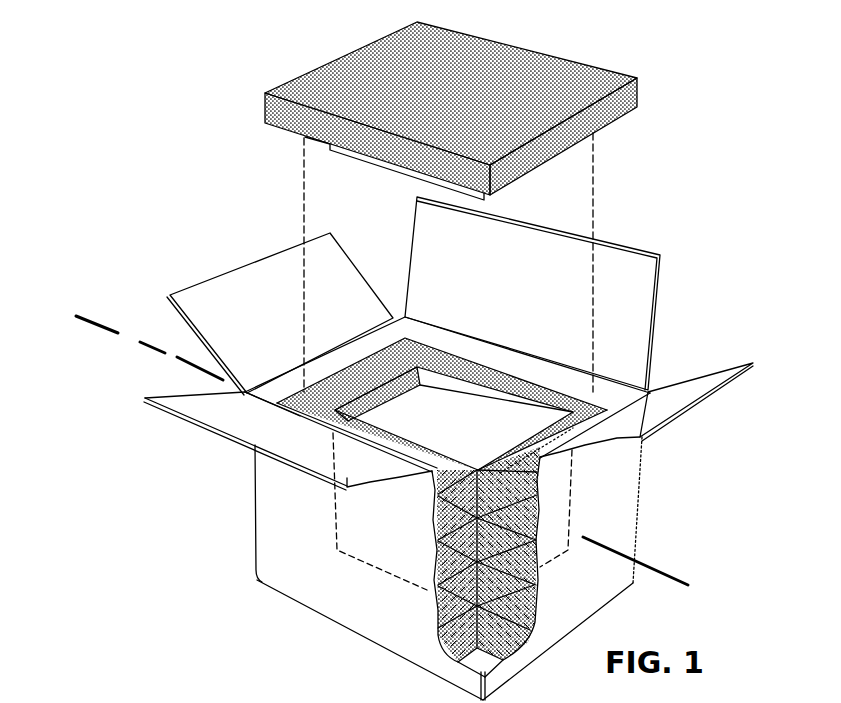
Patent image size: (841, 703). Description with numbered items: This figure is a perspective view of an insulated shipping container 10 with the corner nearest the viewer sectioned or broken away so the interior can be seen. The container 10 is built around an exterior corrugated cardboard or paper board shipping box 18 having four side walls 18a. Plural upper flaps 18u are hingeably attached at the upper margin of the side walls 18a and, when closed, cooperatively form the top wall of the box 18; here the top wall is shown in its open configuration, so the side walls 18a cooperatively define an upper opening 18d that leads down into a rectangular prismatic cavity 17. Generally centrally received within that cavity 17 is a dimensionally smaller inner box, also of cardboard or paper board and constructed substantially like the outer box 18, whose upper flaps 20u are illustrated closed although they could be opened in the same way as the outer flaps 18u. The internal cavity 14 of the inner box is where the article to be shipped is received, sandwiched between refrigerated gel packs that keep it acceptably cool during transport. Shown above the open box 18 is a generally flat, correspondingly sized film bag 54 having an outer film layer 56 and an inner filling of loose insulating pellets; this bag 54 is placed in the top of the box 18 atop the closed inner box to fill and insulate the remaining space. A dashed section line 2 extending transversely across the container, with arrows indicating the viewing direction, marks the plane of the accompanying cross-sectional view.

The insulated shipping container 10 is at (214, 578).
The internal cavity 14 is at (390, 405).
The rectangular prismatic cavity 17 is at (566, 392).
The exterior shipping box 18 is at (648, 519).
The side wall 18a is at (358, 601).
The upper flap 18u is at (203, 291).
The upper opening 18d is at (265, 394).
The upper flaps of inner box 20u is at (432, 437).
The film bag 54 is at (459, 199).
The outer film layer 56 is at (486, 55).
The section line 2- 2 is at (90, 315).